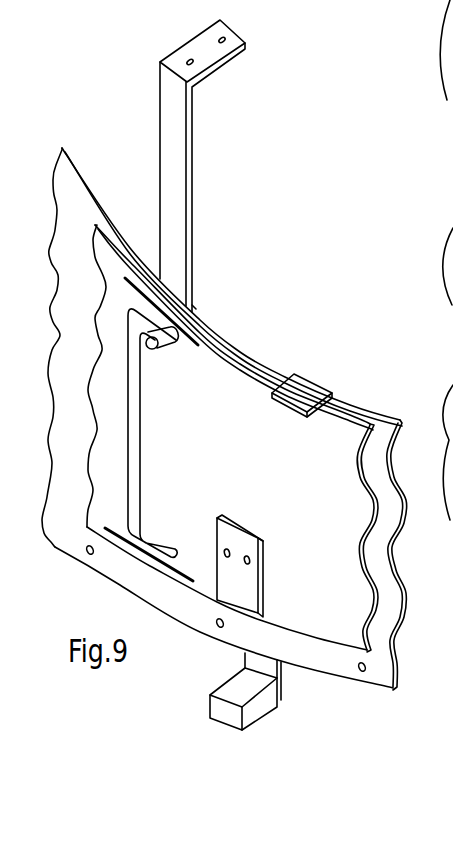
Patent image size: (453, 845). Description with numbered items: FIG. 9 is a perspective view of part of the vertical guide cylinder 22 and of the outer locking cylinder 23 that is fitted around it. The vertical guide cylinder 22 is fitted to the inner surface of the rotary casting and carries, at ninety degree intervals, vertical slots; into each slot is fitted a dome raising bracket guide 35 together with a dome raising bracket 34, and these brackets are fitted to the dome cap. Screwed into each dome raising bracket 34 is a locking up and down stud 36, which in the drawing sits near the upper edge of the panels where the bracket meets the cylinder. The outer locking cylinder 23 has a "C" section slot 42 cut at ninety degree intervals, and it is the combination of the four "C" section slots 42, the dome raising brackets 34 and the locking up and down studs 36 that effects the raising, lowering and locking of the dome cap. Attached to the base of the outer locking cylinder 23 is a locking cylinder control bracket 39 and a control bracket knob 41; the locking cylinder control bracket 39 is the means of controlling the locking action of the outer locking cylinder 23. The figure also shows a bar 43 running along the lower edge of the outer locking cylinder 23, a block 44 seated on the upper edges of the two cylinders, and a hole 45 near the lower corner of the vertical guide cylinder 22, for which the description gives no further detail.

The vertical guide cylinder 22 is at (86, 322).
The outer locking cylinder 23 is at (270, 497).
The dome raising bracket 34 is at (202, 166).
The dome raising bracket guide 35 is at (196, 308).
The locking up and down stud 36 is at (162, 348).
The locking cylinder control bracket 39 is at (240, 550).
The control bracket knob 41 is at (213, 702).
The C section slot 42 is at (135, 463).
The guide bar 43 is at (187, 569).
The spacer block 44 is at (302, 386).
The hole 45 is at (358, 672).